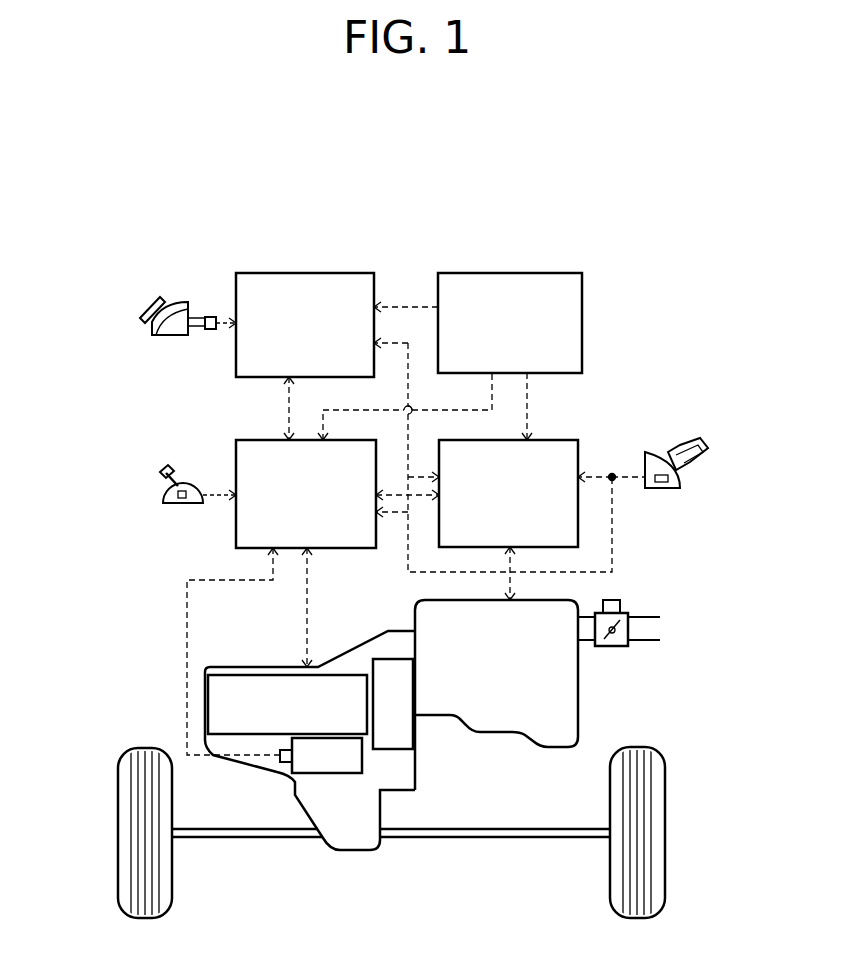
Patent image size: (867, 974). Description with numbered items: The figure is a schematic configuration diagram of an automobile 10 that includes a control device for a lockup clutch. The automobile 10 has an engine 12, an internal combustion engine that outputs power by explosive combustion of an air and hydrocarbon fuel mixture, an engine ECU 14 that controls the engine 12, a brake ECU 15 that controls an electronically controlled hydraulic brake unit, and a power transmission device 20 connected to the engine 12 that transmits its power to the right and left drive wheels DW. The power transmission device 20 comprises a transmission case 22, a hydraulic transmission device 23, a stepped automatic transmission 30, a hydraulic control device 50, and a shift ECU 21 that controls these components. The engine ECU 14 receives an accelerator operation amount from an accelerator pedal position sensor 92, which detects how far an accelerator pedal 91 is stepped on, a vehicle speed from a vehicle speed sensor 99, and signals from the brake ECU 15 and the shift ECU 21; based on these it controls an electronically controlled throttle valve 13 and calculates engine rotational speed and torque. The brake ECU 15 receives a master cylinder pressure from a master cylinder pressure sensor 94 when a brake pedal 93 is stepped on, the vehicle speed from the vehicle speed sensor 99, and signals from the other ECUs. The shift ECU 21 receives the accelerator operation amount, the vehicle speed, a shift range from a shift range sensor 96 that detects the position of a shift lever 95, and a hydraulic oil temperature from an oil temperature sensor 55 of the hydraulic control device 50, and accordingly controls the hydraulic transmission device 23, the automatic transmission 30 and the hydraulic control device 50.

The automobile 10 is at (662, 320).
The engine 12 is at (510, 732).
The electronically controlled throttle valve 13 is at (612, 648).
The engine ECU 14 is at (556, 440).
The brake ECU 15 is at (302, 273).
The power transmission device 20 is at (172, 655).
The shift ECU 21 is at (256, 440).
The transmission case 22 is at (244, 667).
The hydraulic transmission device 23 is at (392, 634).
The stepped automatic transmission 30 is at (207, 697).
The hydraulic control device 50 is at (318, 775).
The oil temperature sensor 55 is at (284, 763).
The accelerator pedal 91 is at (710, 462).
The accelerator pedal position sensor 92 is at (680, 480).
The brake pedal 93 is at (150, 312).
The master cylinder pressure sensor 94 is at (157, 314).
The shift lever 95 is at (162, 470).
The shift range sensor 96 is at (178, 493).
The vehicle speed sensor 99 is at (506, 273).
The drive wheels DW is at (118, 838).